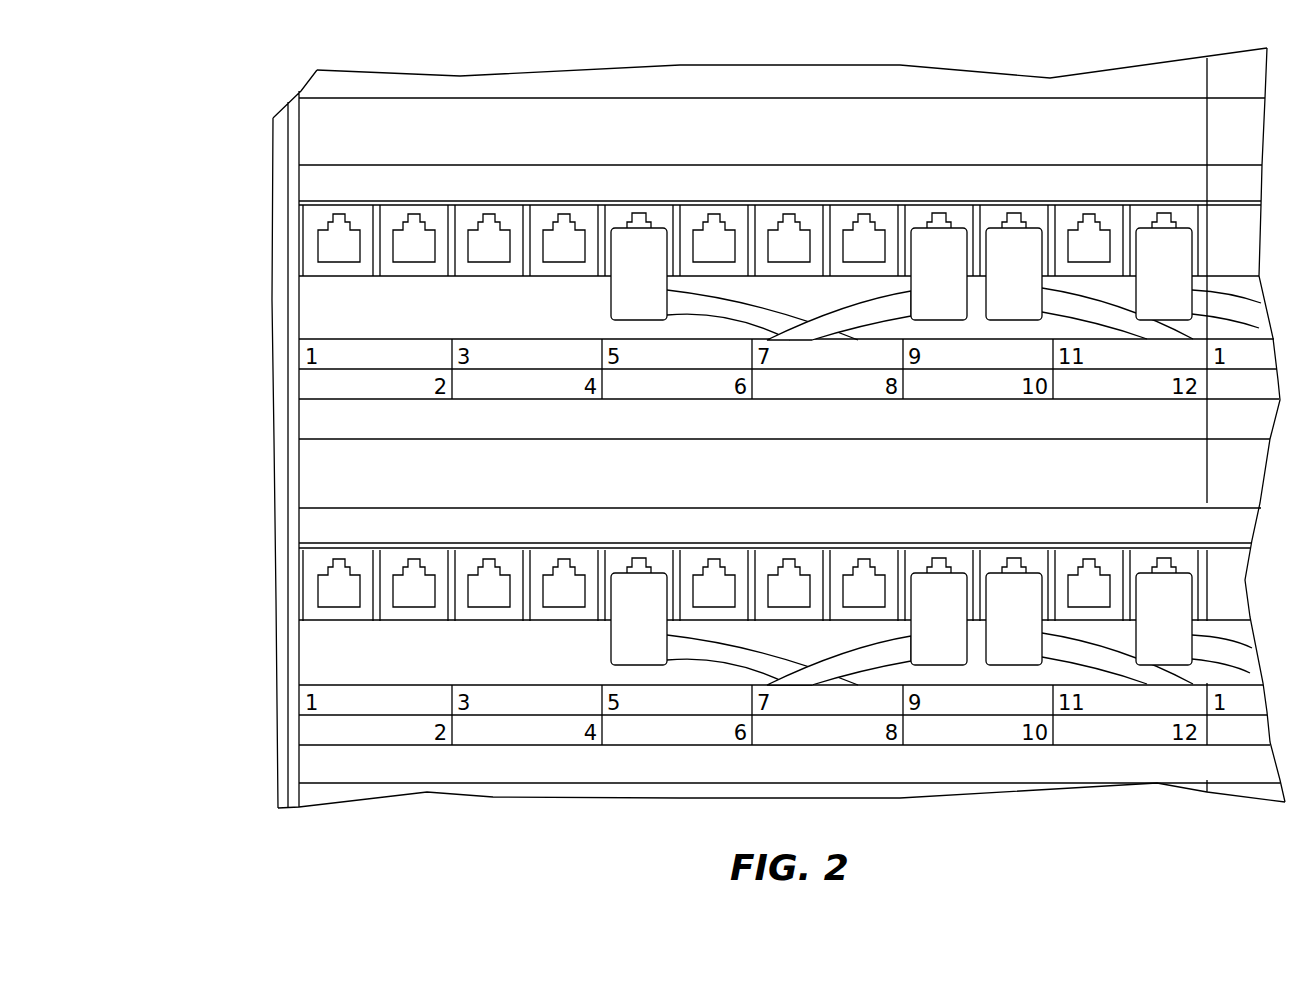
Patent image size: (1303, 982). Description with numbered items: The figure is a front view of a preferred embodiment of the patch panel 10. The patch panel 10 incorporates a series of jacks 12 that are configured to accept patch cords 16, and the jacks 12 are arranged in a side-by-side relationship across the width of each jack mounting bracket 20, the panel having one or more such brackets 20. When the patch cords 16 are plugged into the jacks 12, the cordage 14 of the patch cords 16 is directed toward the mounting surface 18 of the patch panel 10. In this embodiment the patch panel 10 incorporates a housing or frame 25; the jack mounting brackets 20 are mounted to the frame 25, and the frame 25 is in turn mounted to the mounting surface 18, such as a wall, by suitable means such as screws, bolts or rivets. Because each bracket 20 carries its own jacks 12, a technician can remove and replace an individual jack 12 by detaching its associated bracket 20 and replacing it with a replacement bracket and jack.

The patch panel 10 is at (250, 108).
The jack 12 is at (590, 220).
The cordage 14 is at (843, 312).
The patch cord 16 is at (638, 327).
The mounting surface 18 is at (282, 143).
The jack mounting bracket 20 is at (821, 143).
The frame 25 is at (293, 580).